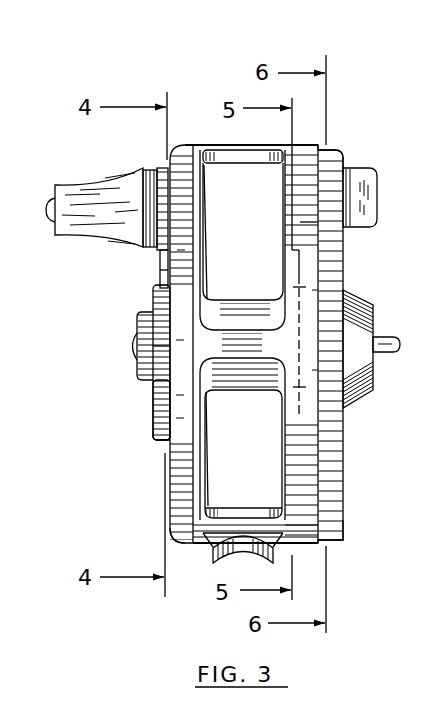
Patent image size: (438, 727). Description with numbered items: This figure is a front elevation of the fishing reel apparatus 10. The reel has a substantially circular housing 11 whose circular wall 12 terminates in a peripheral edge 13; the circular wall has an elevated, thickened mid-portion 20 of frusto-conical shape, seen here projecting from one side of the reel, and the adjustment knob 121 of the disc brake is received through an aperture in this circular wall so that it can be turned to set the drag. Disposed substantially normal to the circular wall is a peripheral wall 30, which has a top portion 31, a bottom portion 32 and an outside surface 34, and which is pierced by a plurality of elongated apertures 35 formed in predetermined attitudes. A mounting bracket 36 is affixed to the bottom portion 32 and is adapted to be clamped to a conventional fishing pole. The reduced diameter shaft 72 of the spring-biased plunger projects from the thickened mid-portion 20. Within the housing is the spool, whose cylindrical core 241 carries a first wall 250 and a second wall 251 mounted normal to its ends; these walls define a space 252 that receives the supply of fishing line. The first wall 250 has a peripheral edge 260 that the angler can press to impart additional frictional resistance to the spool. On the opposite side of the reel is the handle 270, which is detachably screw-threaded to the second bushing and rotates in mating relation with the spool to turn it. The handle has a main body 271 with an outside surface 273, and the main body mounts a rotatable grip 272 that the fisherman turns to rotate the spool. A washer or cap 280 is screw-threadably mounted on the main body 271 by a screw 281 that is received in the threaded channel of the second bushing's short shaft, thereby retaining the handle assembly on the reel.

The apparatus 10 is at (200, 98).
The housing 11 is at (350, 147).
The circular wall 12 is at (344, 259).
The peripheral edge 13 is at (340, 540).
The thickened mid-portion 20 is at (377, 294).
The peripheral wall 30 is at (284, 346).
The top portion 31 is at (228, 144).
The bottom portion 32 is at (303, 547).
The outside surface 34 is at (207, 345).
The elongated apertures 35 is at (283, 320).
The mounting bracket 36 is at (222, 563).
The reduced diameter shaft 72 is at (403, 349).
The adjustment knob 121 is at (368, 189).
The cylindrical core 241 is at (221, 306).
The first wall 250 is at (202, 262).
The second wall 251 is at (296, 224).
The space 252 is at (236, 187).
The peripheral edge 260 is at (187, 545).
The handle 270 is at (148, 393).
The main body 271 is at (152, 420).
The rotatable grip 272 is at (110, 190).
The outside surface 273 is at (155, 276).
The cap 280 is at (148, 384).
The screw 281 is at (134, 340).